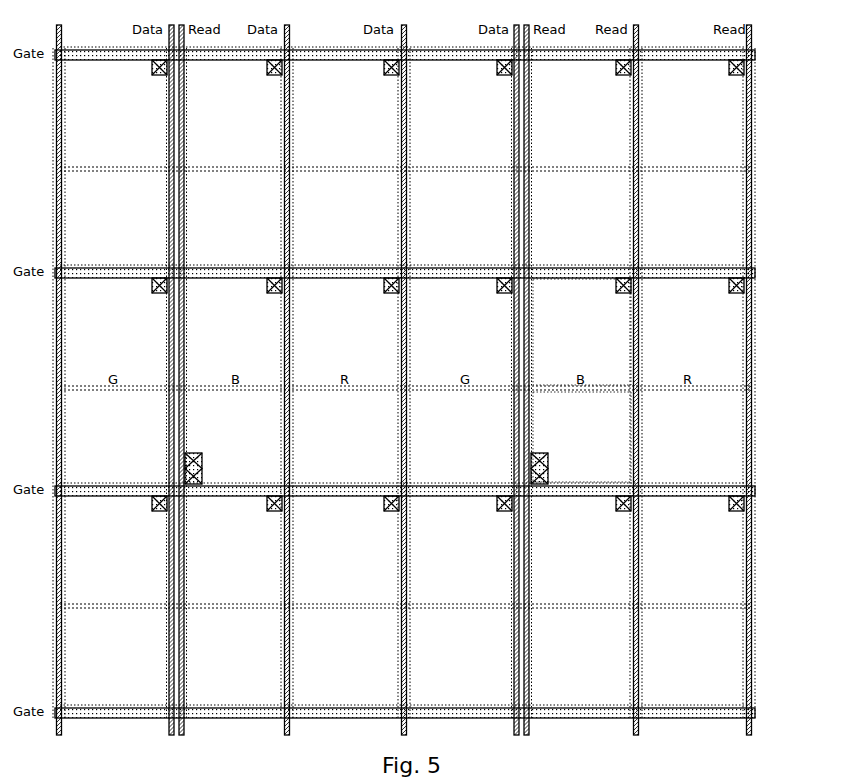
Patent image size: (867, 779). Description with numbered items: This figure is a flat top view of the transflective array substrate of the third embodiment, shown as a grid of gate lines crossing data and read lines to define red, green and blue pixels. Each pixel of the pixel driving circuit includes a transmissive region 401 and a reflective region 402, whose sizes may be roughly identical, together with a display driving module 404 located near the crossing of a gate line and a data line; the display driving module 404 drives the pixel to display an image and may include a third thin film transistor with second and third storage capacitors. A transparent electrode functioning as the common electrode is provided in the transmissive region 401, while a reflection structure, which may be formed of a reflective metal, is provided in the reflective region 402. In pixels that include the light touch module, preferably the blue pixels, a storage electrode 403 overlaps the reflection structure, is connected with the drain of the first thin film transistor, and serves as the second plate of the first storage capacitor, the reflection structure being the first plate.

The transmissive region 401 is at (603, 338).
The reflective region 402 is at (600, 423).
The storage electrode 403 is at (548, 465).
The display driving module 404 is at (629, 291).